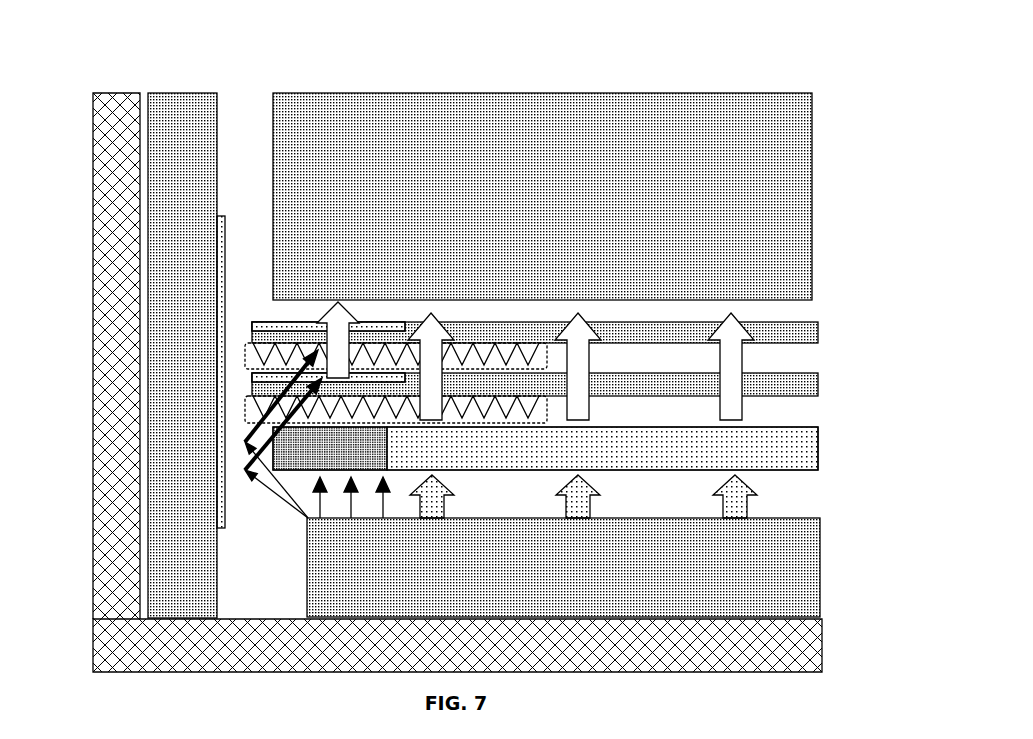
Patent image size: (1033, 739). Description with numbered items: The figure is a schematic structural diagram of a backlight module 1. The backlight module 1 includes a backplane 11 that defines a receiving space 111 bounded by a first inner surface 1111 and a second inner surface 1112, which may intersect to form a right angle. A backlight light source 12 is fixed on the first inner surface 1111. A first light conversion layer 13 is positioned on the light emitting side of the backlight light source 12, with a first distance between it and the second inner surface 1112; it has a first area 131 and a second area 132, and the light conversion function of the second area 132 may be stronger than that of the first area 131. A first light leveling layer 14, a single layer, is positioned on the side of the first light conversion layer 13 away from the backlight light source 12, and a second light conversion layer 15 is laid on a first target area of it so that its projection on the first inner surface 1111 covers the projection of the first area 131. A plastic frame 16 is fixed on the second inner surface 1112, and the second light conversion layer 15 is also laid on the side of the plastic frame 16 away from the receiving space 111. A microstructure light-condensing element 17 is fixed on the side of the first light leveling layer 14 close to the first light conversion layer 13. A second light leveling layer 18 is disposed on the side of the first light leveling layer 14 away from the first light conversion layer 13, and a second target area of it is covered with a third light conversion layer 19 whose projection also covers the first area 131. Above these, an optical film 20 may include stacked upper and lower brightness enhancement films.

The backlight module 1 is at (95, 78).
The backplane 11 is at (469, 347).
The first inner surface 1111 is at (820, 618).
The second inner surface 1112 is at (142, 100).
The receiving space 111 is at (542, 83).
The backlight light source 12 is at (820, 575).
The first light conversion layer 13 is at (464, 445).
The first area 131 is at (288, 453).
The second area 132 is at (755, 455).
The first light leveling layer 14 is at (818, 380).
The second light conversion layer 15 is at (223, 216).
The plastic frame 16 is at (192, 93).
The microstructure light-condensing element 17 is at (245, 355).
The second light leveling layer 18 is at (818, 335).
The third light conversion layer 19 is at (255, 322).
The optical film 20 is at (812, 215).